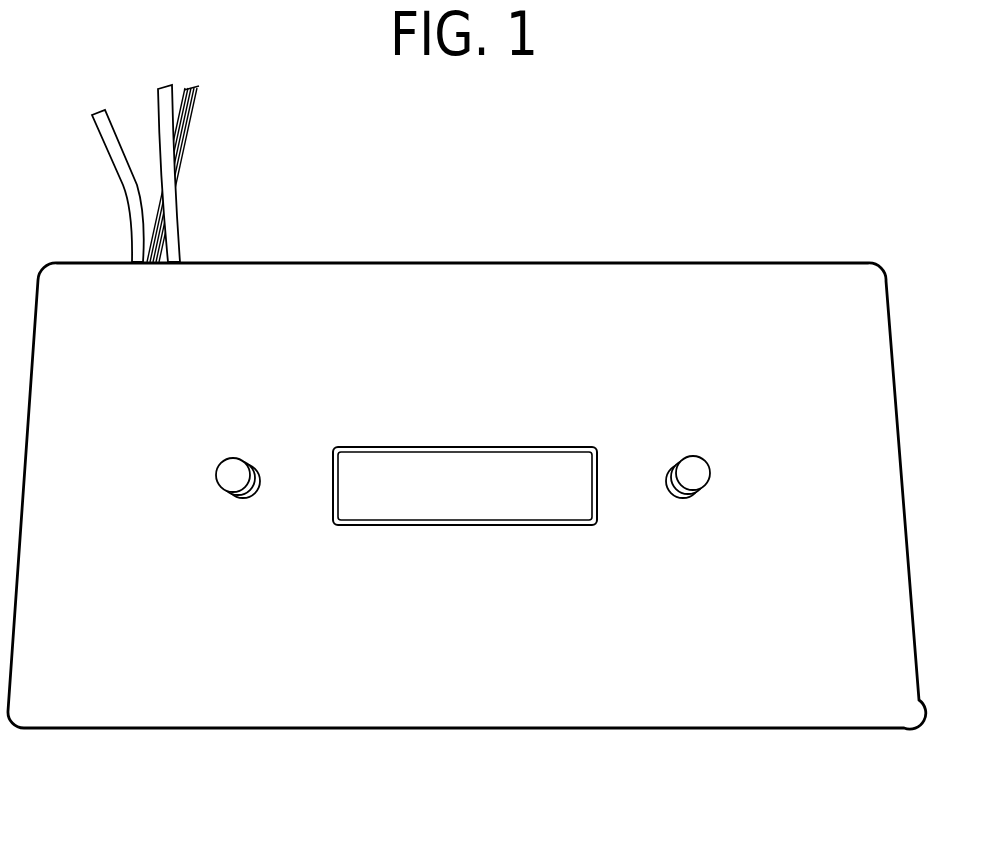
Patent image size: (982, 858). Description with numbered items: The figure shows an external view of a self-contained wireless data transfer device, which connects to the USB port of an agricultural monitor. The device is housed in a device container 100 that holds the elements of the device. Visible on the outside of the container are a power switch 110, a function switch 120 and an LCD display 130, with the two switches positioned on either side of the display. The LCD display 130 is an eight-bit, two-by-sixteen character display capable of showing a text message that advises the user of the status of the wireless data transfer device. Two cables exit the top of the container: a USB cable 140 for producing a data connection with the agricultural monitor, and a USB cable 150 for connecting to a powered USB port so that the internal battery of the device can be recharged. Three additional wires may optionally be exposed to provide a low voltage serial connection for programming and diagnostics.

The device container 100 is at (698, 228).
The power switch 110 is at (233, 465).
The function switch 120 is at (693, 464).
The LCD display 130 is at (469, 433).
The USB cable 140 is at (123, 183).
The USB cable 150 is at (178, 235).